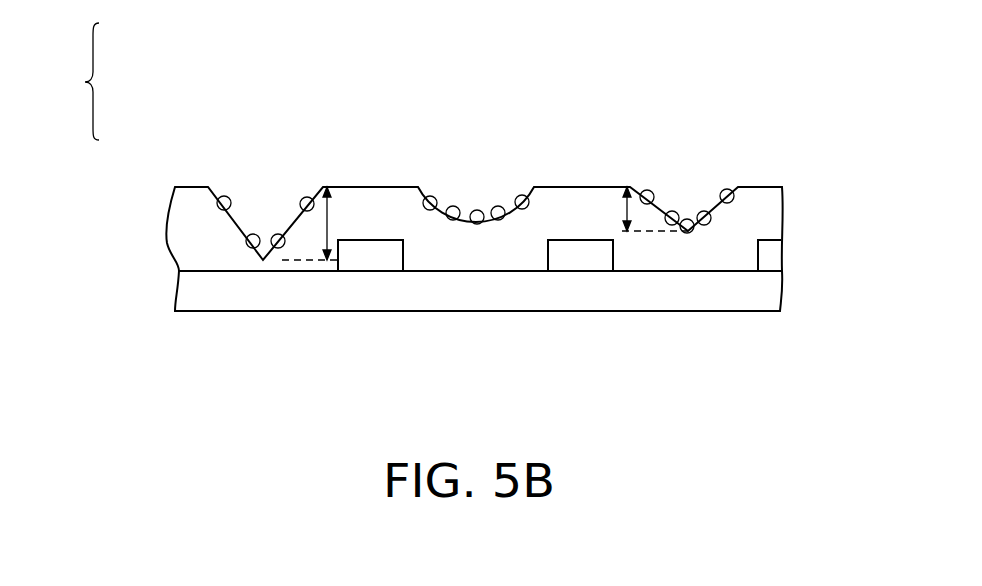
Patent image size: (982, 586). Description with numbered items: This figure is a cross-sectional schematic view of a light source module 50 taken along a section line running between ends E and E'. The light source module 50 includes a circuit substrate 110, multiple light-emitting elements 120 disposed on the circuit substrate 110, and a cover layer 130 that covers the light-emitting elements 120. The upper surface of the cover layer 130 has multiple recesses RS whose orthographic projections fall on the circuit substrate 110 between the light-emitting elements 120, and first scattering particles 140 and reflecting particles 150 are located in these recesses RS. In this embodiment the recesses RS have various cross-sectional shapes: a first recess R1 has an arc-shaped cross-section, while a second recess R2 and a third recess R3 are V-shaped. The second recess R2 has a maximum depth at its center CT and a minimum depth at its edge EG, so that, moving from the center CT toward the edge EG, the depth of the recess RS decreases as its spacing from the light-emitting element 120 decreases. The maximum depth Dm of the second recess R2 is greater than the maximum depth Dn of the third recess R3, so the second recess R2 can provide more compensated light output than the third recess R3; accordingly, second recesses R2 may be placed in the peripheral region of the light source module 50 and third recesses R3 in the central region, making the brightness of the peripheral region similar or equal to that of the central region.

The circuit substrate 110 is at (762, 293).
The light-emitting elements 120 is at (770, 256).
The cover layer 130 is at (763, 218).
The first scattering particles 140 is at (252, 240).
The reflecting particles 150 is at (218, 196).
The light source module 50 is at (878, 425).
The recesses RS is at (71, 81).
The first recess R1 is at (476, 172).
The second recess R2 is at (269, 188).
The third recess R3 is at (689, 172).
The edge EG is at (322, 177).
The center CT is at (252, 260).
The maximum depth of the second recess Dm is at (326, 223).
The maximum depth of the third recess Dn is at (639, 209).
The section line end E is at (177, 339).
The section line end E' is at (785, 335).